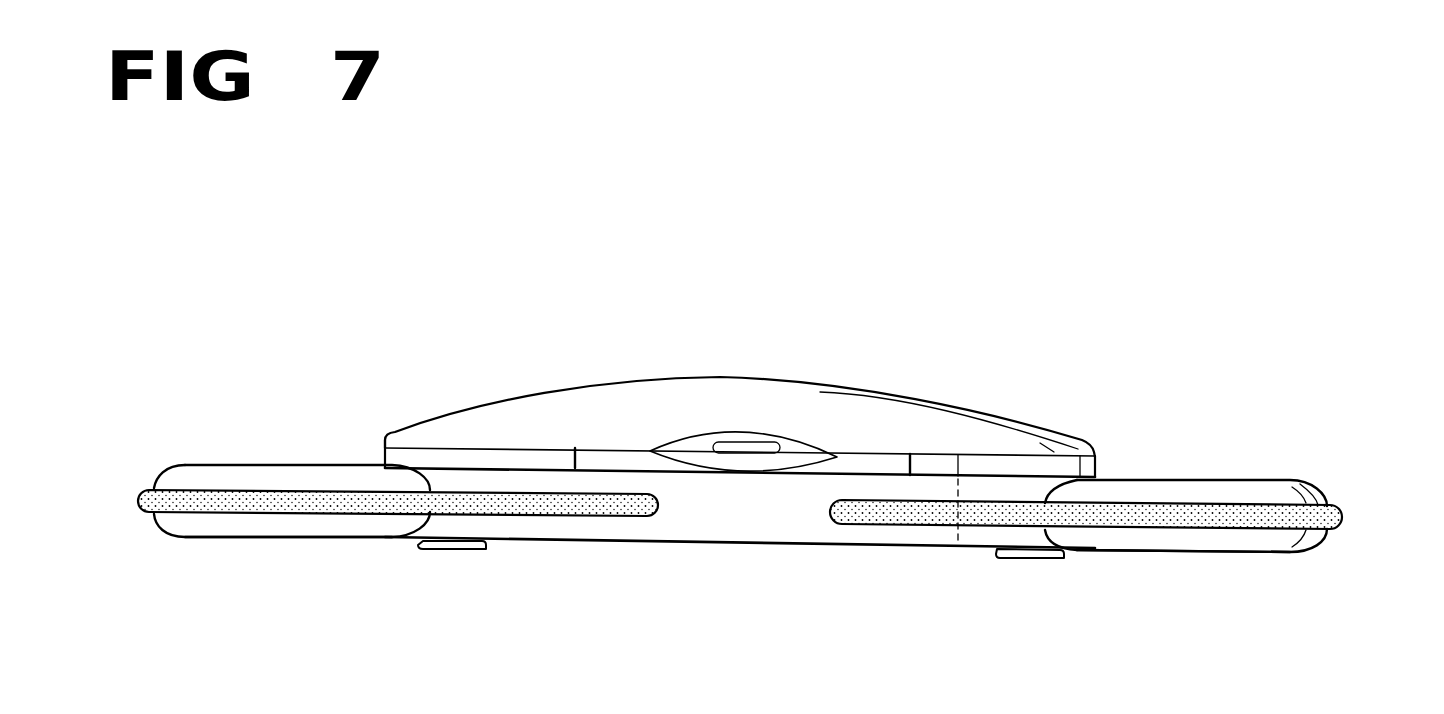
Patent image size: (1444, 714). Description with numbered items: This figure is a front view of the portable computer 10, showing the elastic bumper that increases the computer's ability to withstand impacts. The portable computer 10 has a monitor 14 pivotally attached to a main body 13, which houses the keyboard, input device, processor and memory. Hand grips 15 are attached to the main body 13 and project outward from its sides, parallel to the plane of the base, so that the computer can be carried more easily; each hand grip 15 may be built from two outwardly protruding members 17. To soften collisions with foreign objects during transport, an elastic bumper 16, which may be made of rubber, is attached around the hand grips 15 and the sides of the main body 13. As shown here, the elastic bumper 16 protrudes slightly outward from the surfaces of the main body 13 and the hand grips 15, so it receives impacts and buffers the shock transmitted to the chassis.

The portable computer 10 is at (252, 335).
The main body 13 is at (760, 525).
The monitor 14 is at (740, 398).
The hand grip 15 is at (205, 465).
The elastic bumper 16 is at (321, 503).
The outwardly protruding member 17 is at (247, 521).